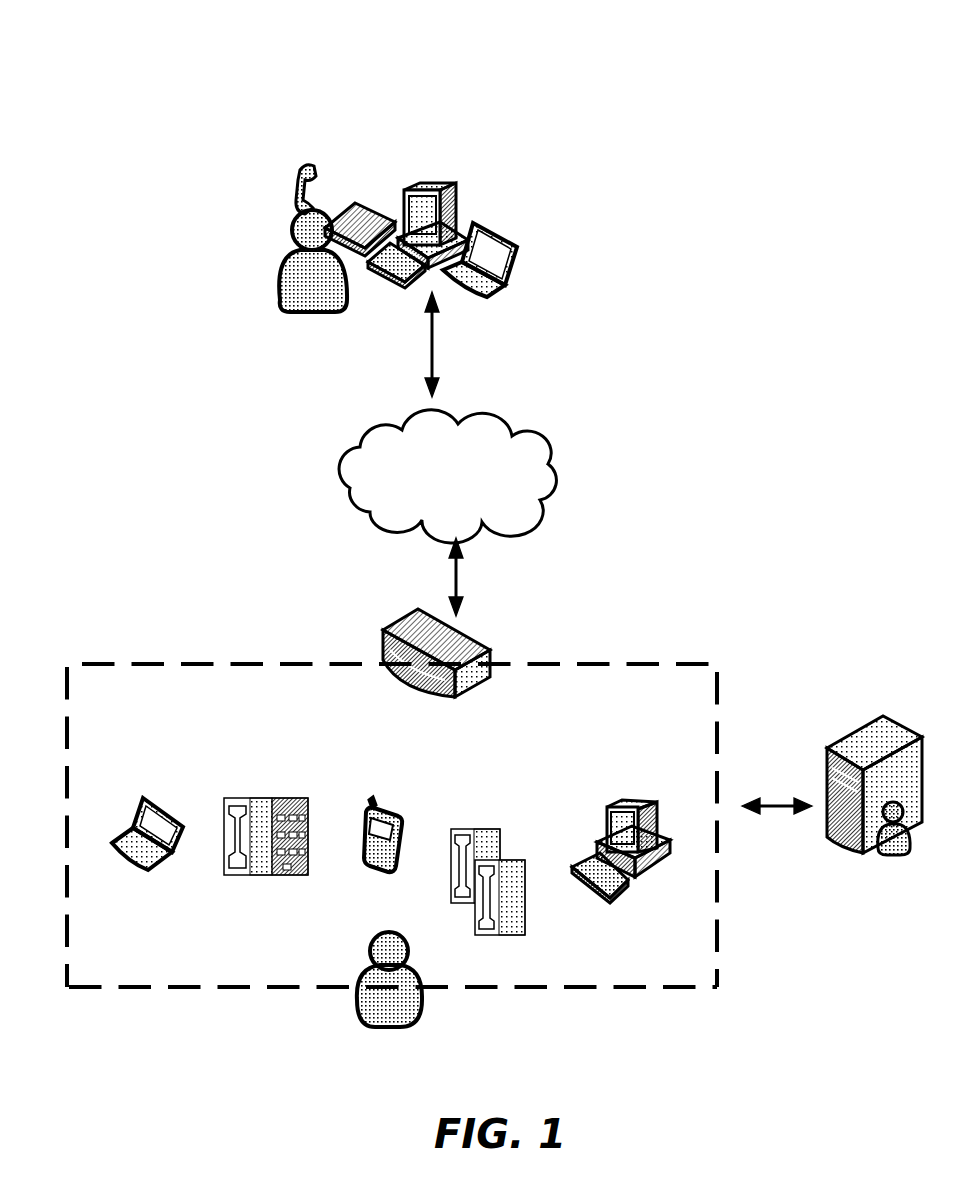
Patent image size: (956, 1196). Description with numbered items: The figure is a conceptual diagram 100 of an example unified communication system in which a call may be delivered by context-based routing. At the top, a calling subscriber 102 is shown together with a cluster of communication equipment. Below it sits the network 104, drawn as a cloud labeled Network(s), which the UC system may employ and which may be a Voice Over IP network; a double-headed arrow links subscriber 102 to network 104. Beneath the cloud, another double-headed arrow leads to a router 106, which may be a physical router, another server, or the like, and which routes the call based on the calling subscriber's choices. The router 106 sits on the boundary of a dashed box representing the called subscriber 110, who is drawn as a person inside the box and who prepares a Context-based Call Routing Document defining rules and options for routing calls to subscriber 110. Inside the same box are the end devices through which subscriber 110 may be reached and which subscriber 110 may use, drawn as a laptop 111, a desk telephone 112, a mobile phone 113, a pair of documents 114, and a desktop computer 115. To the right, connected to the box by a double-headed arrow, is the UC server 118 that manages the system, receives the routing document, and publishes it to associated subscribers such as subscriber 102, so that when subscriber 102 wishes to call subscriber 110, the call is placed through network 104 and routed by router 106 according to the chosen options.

The diagram 100 is at (723, 48).
The subscriber 102 is at (253, 148).
The network 104 is at (381, 407).
The router 106 is at (382, 607).
The subscriber 110 is at (356, 932).
The laptop computer 111 is at (162, 786).
The end device 112 is at (256, 782).
The end device 113 is at (353, 785).
The end device 114 is at (471, 789).
The end device 115 is at (604, 786).
The UC server 118 is at (874, 694).